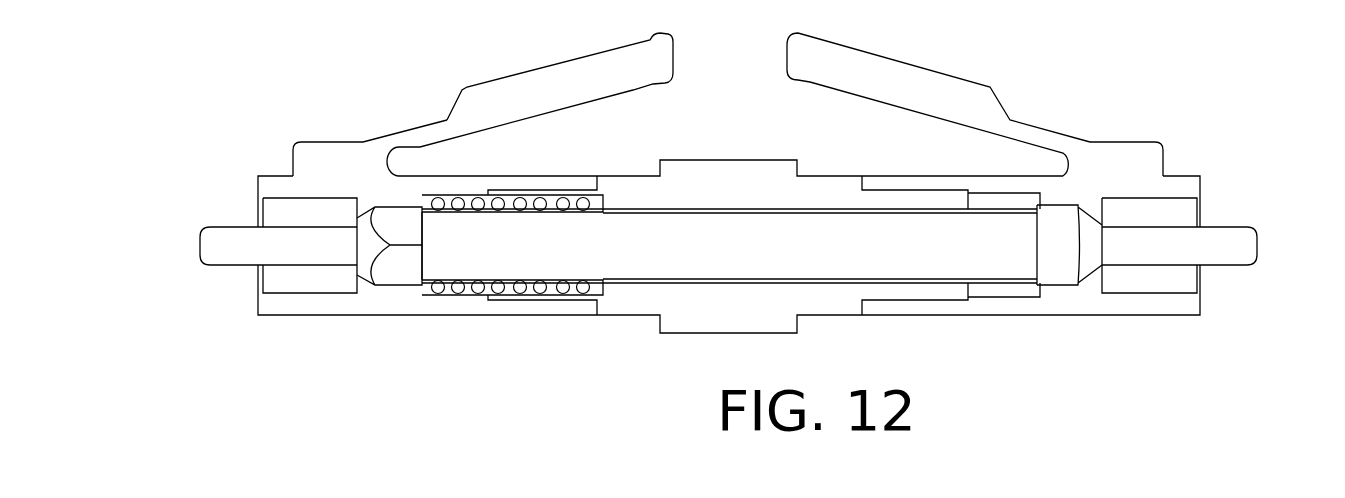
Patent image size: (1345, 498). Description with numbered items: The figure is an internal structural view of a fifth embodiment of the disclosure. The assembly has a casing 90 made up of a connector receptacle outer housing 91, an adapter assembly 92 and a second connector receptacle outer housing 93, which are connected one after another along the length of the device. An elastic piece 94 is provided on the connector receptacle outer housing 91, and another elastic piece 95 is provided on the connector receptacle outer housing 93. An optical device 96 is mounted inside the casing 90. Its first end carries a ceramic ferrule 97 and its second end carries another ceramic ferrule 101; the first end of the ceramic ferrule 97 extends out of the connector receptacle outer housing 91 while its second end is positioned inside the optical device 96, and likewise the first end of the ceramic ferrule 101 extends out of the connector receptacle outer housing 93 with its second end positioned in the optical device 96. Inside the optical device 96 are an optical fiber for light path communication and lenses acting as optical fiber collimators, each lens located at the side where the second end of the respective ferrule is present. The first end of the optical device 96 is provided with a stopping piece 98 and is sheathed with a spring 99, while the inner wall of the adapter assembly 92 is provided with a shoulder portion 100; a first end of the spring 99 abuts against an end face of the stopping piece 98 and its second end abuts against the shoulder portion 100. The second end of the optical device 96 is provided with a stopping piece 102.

The casing 90 is at (1098, 70).
The connector receptacle outer housing 91 is at (355, 180).
The adapter assembly 92 is at (687, 307).
The connector receptacle outer housing 93 is at (1055, 297).
The elastic piece 94 is at (555, 90).
The elastic piece 95 is at (858, 82).
The optical device 96 is at (525, 260).
The ceramic ferrule 97 is at (256, 246).
The stopping piece 98 is at (392, 268).
The spring 99 is at (573, 197).
The shoulder portion 100 is at (607, 203).
The ceramic ferrule 101 is at (1207, 245).
The stopping piece 102 is at (1065, 228).